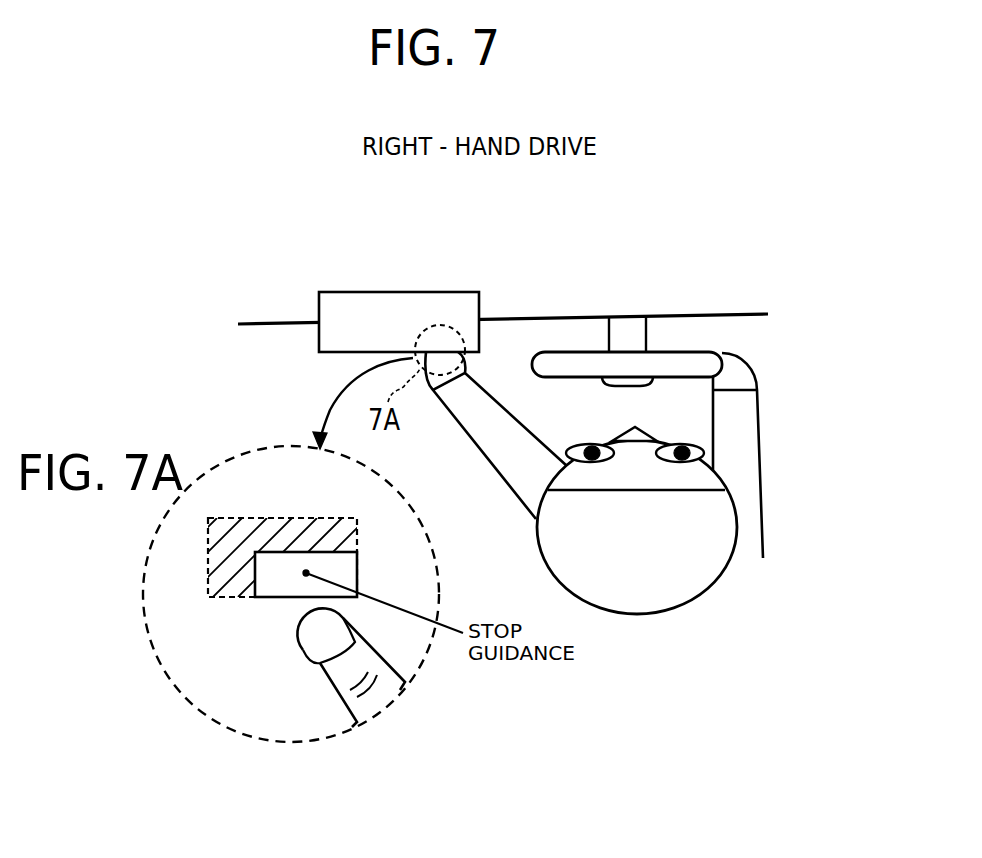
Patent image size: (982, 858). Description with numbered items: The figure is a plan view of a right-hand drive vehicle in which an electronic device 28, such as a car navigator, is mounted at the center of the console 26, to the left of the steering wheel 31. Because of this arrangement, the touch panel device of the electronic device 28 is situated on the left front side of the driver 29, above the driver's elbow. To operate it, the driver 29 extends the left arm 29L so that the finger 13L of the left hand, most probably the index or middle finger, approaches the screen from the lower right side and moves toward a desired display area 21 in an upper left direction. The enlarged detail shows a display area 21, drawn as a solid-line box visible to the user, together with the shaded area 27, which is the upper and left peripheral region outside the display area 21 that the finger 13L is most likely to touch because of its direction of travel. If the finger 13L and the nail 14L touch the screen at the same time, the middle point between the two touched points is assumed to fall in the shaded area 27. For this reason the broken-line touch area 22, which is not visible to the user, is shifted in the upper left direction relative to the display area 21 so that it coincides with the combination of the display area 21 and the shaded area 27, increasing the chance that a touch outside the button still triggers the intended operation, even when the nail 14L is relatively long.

In FIG. 7, the console 26 is at (628, 288).
In FIG. 7, the electronic device 28 is at (308, 308).
In FIG. 7, the steering wheel 31 is at (683, 358).
In FIG. 7, the driver 29 is at (647, 587).
In FIG. 7, the left arm 29L is at (492, 440).
In FIG. 7A, the touch area 22 is at (277, 563).
In FIG. 7A, the shaded area 27 is at (208, 597).
In FIG. 7A, the display area 21 is at (277, 590).
In FIG. 7A, the finger 13L is at (370, 693).
In FIG. 7A, the nail 14L is at (317, 650).